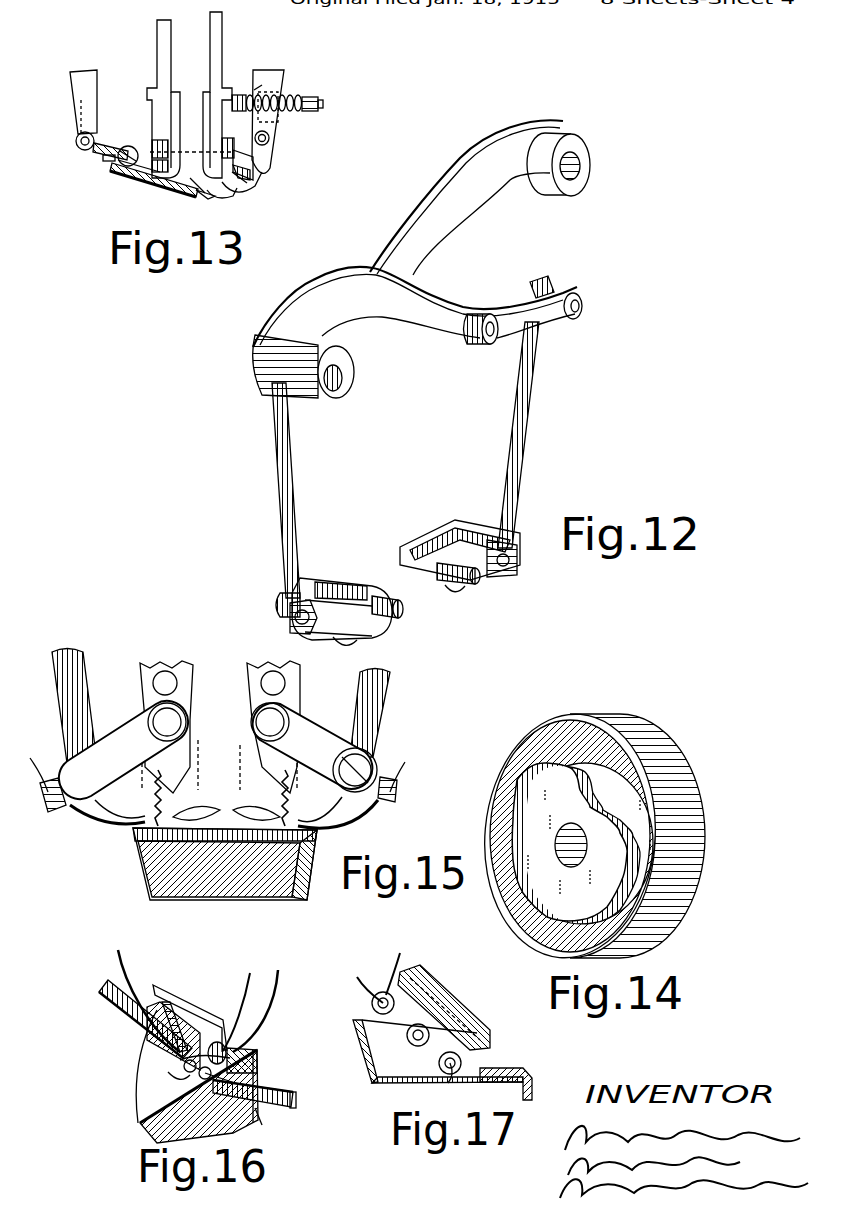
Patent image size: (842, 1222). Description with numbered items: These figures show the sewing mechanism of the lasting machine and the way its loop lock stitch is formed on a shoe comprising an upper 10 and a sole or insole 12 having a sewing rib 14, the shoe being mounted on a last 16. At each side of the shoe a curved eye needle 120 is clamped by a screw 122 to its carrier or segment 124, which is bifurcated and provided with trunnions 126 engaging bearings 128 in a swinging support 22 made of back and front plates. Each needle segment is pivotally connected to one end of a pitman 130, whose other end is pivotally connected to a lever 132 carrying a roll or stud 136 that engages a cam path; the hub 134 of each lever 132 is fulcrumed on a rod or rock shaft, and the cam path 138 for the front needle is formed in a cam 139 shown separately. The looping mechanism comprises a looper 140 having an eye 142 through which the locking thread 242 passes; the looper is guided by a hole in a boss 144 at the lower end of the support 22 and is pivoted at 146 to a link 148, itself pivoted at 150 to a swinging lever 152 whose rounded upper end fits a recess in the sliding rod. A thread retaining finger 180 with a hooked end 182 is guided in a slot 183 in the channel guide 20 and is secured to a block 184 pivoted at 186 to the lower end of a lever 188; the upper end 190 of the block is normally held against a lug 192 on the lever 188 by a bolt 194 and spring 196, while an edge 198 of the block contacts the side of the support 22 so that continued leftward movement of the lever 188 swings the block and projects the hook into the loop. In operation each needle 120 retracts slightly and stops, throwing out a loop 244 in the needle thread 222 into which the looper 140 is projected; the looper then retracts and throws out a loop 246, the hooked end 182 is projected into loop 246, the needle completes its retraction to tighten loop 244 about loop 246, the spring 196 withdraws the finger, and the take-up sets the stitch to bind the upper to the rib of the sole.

In FIG. 15, the upper 10 is at (148, 897).
In FIG. 15, the sole or insole 12 is at (142, 850).
In FIG. 16, the sole or insole 12 is at (170, 1102).
In FIG. 15, the sewing rib 14 is at (143, 830).
In FIG. 16, the sewing rib 14 is at (167, 1048).
In FIG. 15, the last 16 is at (173, 883).
In FIG. 16, the last 16 is at (153, 1137).
In FIG. 13, the channel guide 20 is at (221, 194).
In FIG. 13, the swinging support 22 is at (166, 48).
In FIG. 12, the curved eye needle 120 is at (343, 644).
In FIG. 15, the curved eye needle 120 is at (333, 810).
In FIG. 16, the curved eye needle 120 is at (273, 1000).
In FIG. 12, the screw 122 is at (294, 627).
In FIG. 15, the screw 122 is at (400, 792).
In FIG. 12, the carrier or segment 124 is at (317, 588).
In FIG. 15, the carrier or segment 124 is at (108, 740).
In FIG. 12, the trunnions 126 is at (397, 610).
In FIG. 15, the trunnions 126 is at (265, 725).
In FIG. 13, the bearings 128 is at (133, 184).
In FIG. 12, the pitman 130 is at (297, 467).
In FIG. 15, the pitman 130 is at (87, 678).
In FIG. 12, the lever 132 is at (452, 205).
In FIG. 12, the hub 134 is at (567, 185).
In FIG. 12, the roll or stud 136 is at (475, 335).
In FIG. 14, the cam path 138 is at (623, 927).
In FIG. 14, the cam 139 is at (690, 828).
In FIG. 13, the looper 140 is at (112, 155).
In FIG. 16, the looper 140 is at (127, 1012).
In FIG. 13, the eye 142 is at (212, 195).
In FIG. 16, the eye 142 is at (253, 1117).
In FIG. 13, the boss 144 is at (160, 188).
In FIG. 13, the pivot 146 is at (117, 171).
In FIG. 13, the link 148 is at (100, 153).
In FIG. 13, the pivot 150 is at (78, 137).
In FIG. 13, the swinging lever 152 is at (83, 95).
In FIG. 13, the thread retaining finger 180 is at (242, 188).
In FIG. 16, the thread retaining finger 180 is at (273, 1103).
In FIG. 13, the hooked end 182 is at (202, 192).
In FIG. 16, the hooked end 182 is at (225, 1078).
In FIG. 13, the slot 183 is at (247, 183).
In FIG. 13, the block 184 is at (257, 157).
In FIG. 13, the pivot 186 is at (269, 138).
In FIG. 13, the lever 188 is at (280, 87).
In FIG. 13, the upper end 190 is at (257, 91).
In FIG. 13, the lug 192 is at (273, 117).
In FIG. 13, the bolt 194 is at (323, 106).
In FIG. 13, the spring 196 is at (293, 100).
In FIG. 13, the edge 198 is at (250, 172).
In FIG. 16, the needle thread 222 is at (247, 1003).
In FIG. 17, the needle thread 222 is at (480, 1073).
In FIG. 16, the locking thread 242 is at (127, 975).
In FIG. 17, the locking thread 242 is at (407, 1040).
In FIG. 15, the loop 244 is at (250, 810).
In FIG. 16, the loop 244 is at (180, 1066).
In FIG. 17, the loop 244 is at (383, 997).
In FIG. 16, the loop 246 is at (228, 1067).
In FIG. 17, the loop 246 is at (380, 1000).